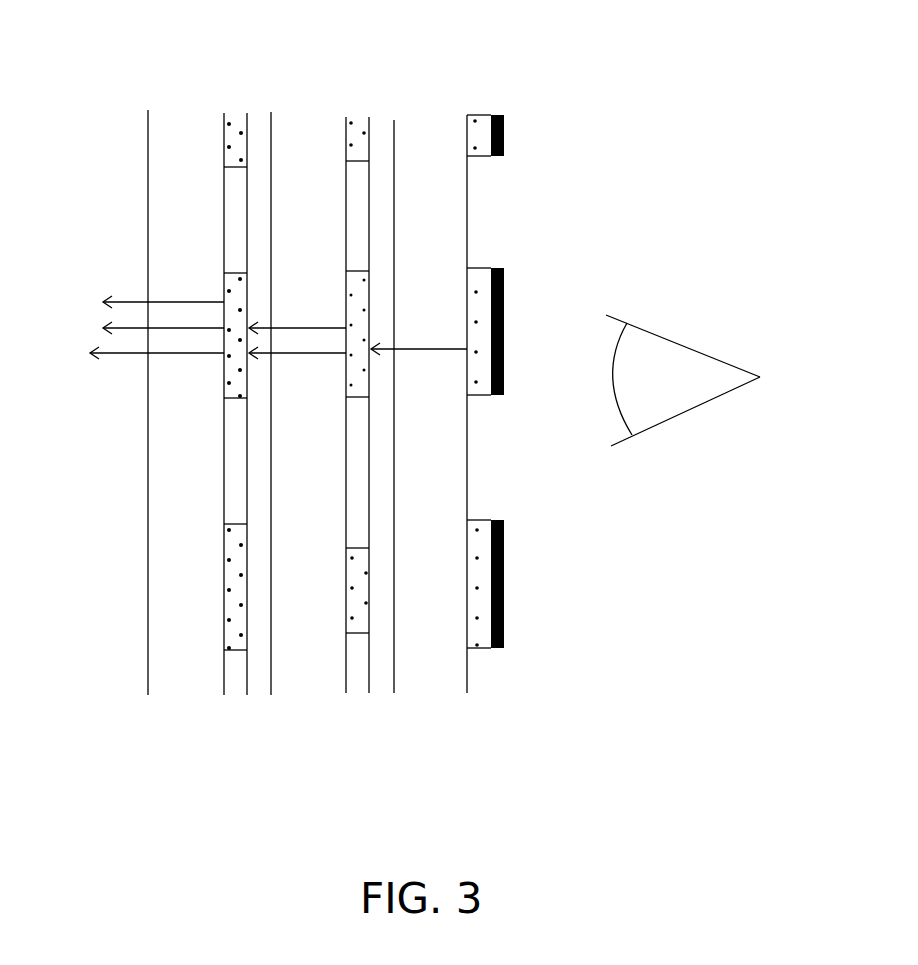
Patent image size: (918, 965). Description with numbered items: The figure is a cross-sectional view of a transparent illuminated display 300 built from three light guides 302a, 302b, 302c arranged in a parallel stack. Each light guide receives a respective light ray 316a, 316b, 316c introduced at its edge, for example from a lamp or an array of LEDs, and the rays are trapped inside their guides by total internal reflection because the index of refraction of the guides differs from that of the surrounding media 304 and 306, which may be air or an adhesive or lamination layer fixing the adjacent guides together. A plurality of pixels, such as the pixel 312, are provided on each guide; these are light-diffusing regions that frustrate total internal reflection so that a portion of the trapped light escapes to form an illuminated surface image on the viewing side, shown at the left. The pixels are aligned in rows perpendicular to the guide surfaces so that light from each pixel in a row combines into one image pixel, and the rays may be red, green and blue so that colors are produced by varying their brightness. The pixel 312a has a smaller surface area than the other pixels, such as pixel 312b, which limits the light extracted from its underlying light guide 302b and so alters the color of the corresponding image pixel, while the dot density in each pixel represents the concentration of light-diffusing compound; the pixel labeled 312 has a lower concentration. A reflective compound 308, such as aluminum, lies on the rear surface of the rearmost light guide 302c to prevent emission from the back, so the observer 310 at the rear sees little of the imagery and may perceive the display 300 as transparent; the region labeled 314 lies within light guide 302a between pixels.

The transparent illuminated display 300 is at (443, 28).
The light guide 302a is at (168, 402).
The light guide 302b is at (330, 405).
The rearmost light guide layer 302c is at (486, 404).
The surrounding medium 304 is at (263, 690).
The surrounding medium 306 is at (384, 688).
The reflective compound 308 is at (503, 574).
The observer 310 is at (683, 380).
The pixel 312 is at (477, 393).
The pixel 312a is at (355, 575).
The pixel 312b is at (355, 383).
The transparent region 314 is at (235, 452).
The light ray 316a is at (157, 222).
The light ray 316b is at (297, 222).
The light ray 316c is at (419, 220).